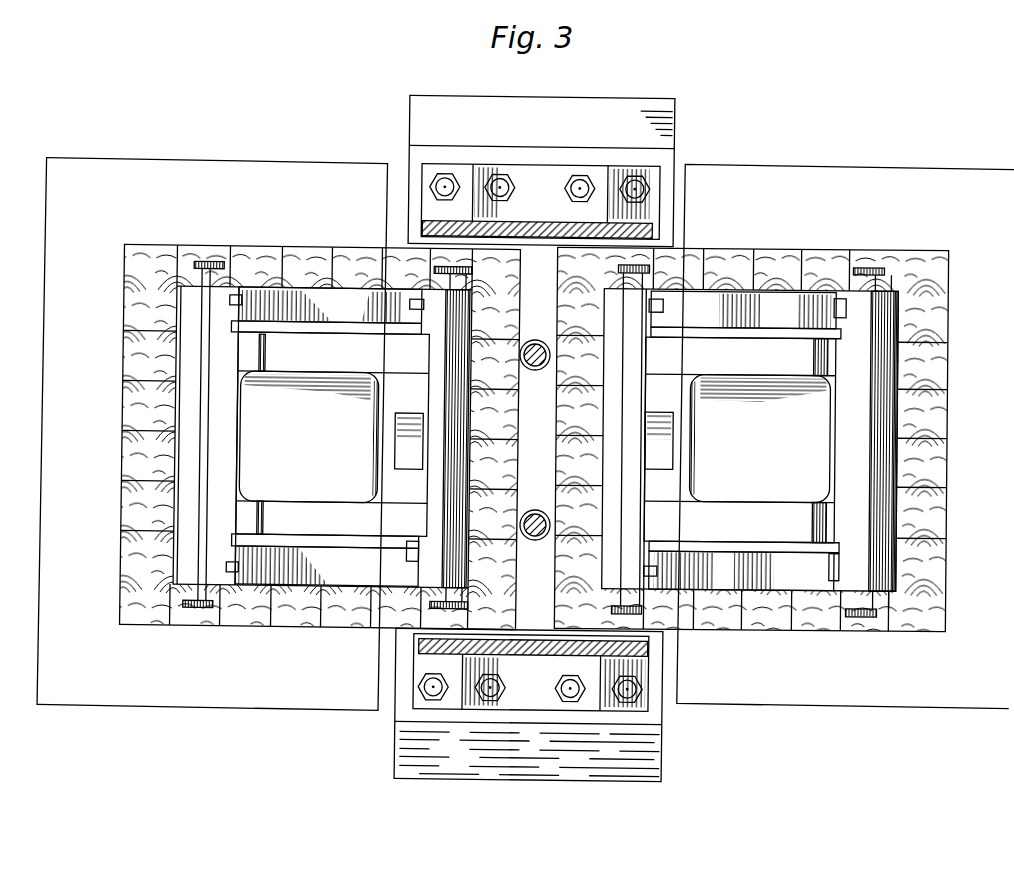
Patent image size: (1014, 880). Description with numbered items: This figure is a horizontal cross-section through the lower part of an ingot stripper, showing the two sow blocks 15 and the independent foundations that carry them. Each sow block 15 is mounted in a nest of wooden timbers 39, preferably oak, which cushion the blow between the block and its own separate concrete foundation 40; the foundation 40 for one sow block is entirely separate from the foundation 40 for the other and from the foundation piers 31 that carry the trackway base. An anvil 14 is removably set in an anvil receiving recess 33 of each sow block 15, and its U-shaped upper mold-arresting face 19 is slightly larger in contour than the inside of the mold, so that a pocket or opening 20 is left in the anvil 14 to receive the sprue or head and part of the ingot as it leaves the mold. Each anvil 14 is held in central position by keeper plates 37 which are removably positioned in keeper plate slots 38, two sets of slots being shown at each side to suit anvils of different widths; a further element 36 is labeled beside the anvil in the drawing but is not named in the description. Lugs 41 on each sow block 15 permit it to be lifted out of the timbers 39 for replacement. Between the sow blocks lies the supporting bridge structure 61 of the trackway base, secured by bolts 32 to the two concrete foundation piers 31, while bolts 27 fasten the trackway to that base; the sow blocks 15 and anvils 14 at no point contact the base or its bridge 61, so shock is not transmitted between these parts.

The anvil 14 is at (250, 495).
The sow block 15 is at (236, 309).
The mold-arresting face 19 is at (535, 436).
The pocket or opening 20 is at (534, 437).
The bolt 27 is at (536, 340).
The concrete foundation pier 31 is at (514, 762).
The bolt 32 is at (498, 180).
The anvil receiving recess 33 is at (297, 292).
The guide strip 36 is at (245, 352).
The keeper plate 37 is at (346, 326).
The keeper plate slot 38 is at (241, 303).
The wooden timbers 39 is at (534, 437).
The concrete foundation 40 is at (72, 318).
The lug 41 is at (208, 262).
The supporting bridge structure 61 is at (652, 212).